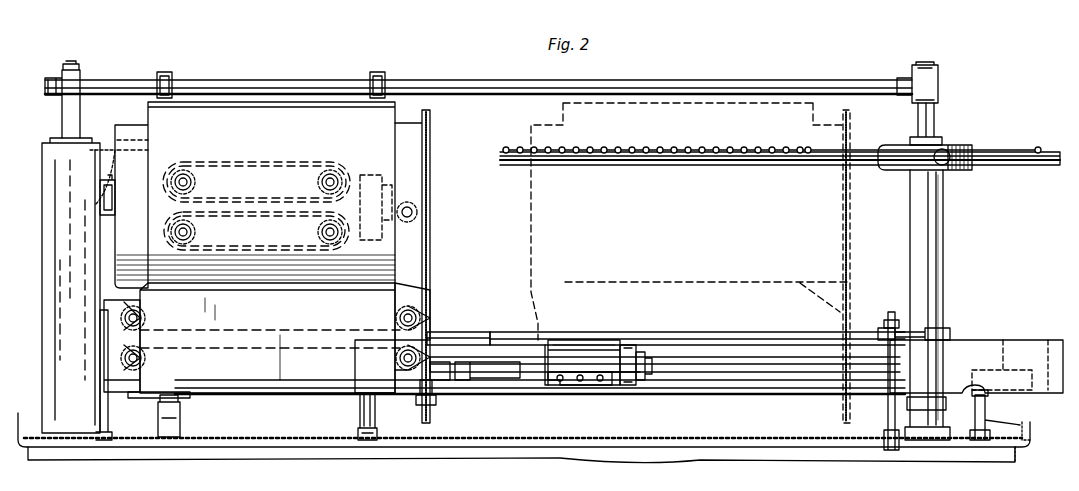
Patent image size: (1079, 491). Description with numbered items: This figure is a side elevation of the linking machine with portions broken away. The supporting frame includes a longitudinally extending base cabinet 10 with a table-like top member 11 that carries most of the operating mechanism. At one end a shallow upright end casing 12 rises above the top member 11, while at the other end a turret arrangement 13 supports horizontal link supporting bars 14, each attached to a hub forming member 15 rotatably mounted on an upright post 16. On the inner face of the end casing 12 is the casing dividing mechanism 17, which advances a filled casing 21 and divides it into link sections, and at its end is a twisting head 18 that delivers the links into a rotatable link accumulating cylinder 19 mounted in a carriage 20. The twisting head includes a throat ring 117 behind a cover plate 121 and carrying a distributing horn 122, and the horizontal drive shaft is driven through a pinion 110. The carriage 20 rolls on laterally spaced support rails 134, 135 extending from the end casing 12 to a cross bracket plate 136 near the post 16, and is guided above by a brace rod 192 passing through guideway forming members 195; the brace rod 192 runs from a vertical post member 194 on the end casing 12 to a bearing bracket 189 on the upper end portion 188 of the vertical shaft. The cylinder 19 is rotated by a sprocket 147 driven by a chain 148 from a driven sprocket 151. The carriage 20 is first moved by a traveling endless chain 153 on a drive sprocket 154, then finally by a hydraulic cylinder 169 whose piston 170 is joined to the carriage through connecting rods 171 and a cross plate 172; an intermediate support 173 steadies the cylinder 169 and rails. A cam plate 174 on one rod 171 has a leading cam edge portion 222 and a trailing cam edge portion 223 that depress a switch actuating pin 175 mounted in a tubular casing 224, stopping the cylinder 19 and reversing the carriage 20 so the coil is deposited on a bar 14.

The base cabinet 10 is at (846, 458).
The top member 11 is at (810, 445).
The end casing 12 is at (62, 263).
The turret arrangement 13 is at (945, 188).
The link supporting bar 14 is at (680, 152).
The hub forming member 15 is at (950, 152).
The upright post 16 is at (936, 256).
The casing dividing mechanism 17 is at (272, 160).
The twisting head 18 is at (420, 230).
The link accumulating cylinder 19 is at (412, 164).
The carriage 20 is at (255, 104).
The filled casing 21 is at (166, 172).
The pinion 110 is at (426, 418).
The throat ring 117 is at (148, 398).
The cover plate 121 is at (375, 175).
The distributing horn 122 is at (418, 208).
The support rail 134 is at (452, 331).
The support rail 135 is at (504, 331).
The cross bracket plate 136 is at (890, 320).
The sprocket 147 is at (432, 132).
The chain 148 is at (428, 300).
The driven sprocket 151 is at (432, 412).
The traveling endless chain 153 is at (263, 393).
The drive sprocket 154 is at (182, 400).
The hydraulic cylinder 169 is at (572, 339).
The piston 170 is at (622, 345).
The connecting rod 171 is at (594, 331).
The cross plate 172 is at (650, 366).
The intermediate support 173 is at (358, 408).
The cam plate 174 is at (594, 388).
The switch actuating pin 175 is at (986, 400).
The upper end portion of vertical shaft 188 is at (924, 118).
The bearing bracket 189 is at (925, 84).
The brace rod 192 is at (498, 82).
The vertical post member 194 is at (64, 108).
The guideway forming member 195 is at (166, 72).
The leading cam edge portion 222 is at (567, 396).
The trailing cam edge portion 223 is at (535, 378).
The tubular casing 224 is at (1035, 446).